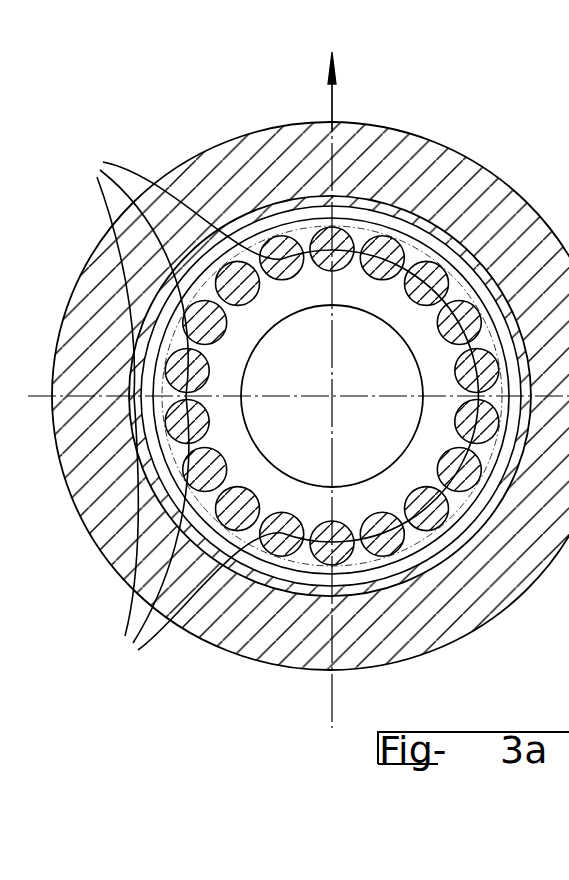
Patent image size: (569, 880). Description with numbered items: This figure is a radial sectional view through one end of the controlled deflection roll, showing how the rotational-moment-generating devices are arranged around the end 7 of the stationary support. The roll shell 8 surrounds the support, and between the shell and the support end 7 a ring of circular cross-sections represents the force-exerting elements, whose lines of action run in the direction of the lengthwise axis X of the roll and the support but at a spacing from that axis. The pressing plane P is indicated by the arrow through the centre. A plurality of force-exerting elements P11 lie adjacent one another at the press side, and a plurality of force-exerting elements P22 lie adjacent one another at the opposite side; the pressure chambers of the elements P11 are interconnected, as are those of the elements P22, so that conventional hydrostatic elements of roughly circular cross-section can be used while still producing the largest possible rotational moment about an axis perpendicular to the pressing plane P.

The opposite ends of the stationary support 7 is at (375, 370).
The roll shell 8 is at (482, 578).
The lengthwise axis X is at (333, 397).
The pressing plane P is at (347, 91).
The force-exerting elements at the press side P11 is at (89, 183).
The force-exerting elements at the opposite side P22 is at (172, 533).